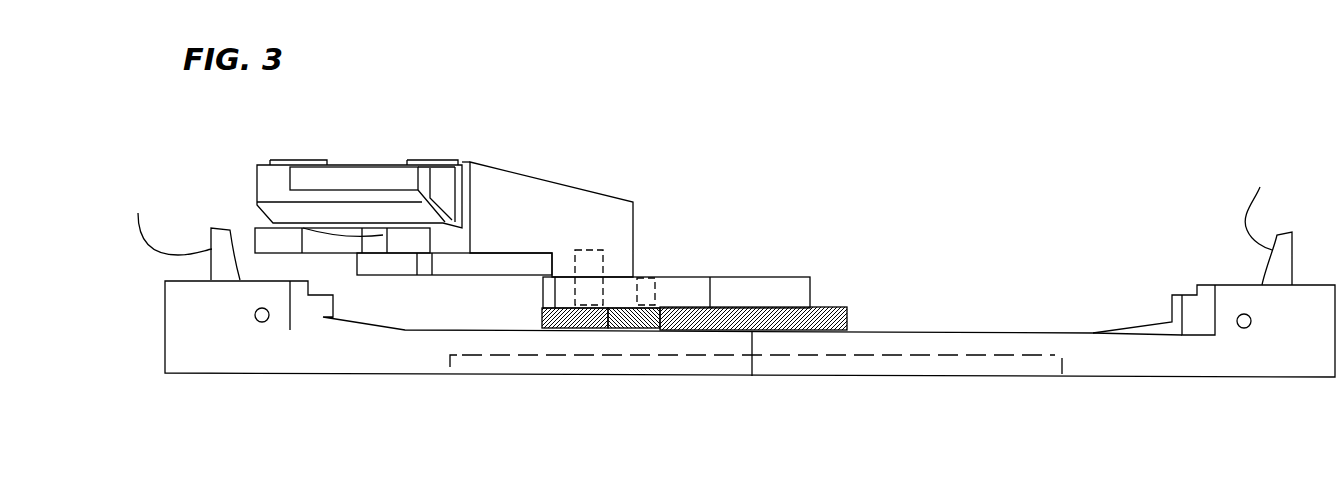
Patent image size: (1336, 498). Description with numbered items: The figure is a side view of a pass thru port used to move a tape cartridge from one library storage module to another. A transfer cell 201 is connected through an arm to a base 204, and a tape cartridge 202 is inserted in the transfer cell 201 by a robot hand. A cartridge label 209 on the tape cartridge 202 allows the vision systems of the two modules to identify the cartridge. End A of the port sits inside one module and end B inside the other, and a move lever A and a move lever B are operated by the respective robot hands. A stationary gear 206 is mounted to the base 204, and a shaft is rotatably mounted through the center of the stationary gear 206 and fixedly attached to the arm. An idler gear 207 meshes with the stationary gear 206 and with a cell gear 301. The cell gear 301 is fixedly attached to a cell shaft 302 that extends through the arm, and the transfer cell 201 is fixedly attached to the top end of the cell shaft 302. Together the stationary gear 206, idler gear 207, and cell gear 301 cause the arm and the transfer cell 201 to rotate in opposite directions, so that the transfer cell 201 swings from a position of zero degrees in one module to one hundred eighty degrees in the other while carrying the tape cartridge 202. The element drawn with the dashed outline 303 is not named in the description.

The transfer cell 201 is at (578, 203).
The tape cartridge 202 is at (270, 178).
The base 204 is at (1103, 363).
The stationary gear 206 is at (847, 320).
The idler gear 207 is at (643, 328).
The cartridge label 209 is at (370, 174).
The cell gear 301 is at (540, 316).
The cell shaft 302 is at (598, 260).
The engaging portion 303 is at (650, 290).